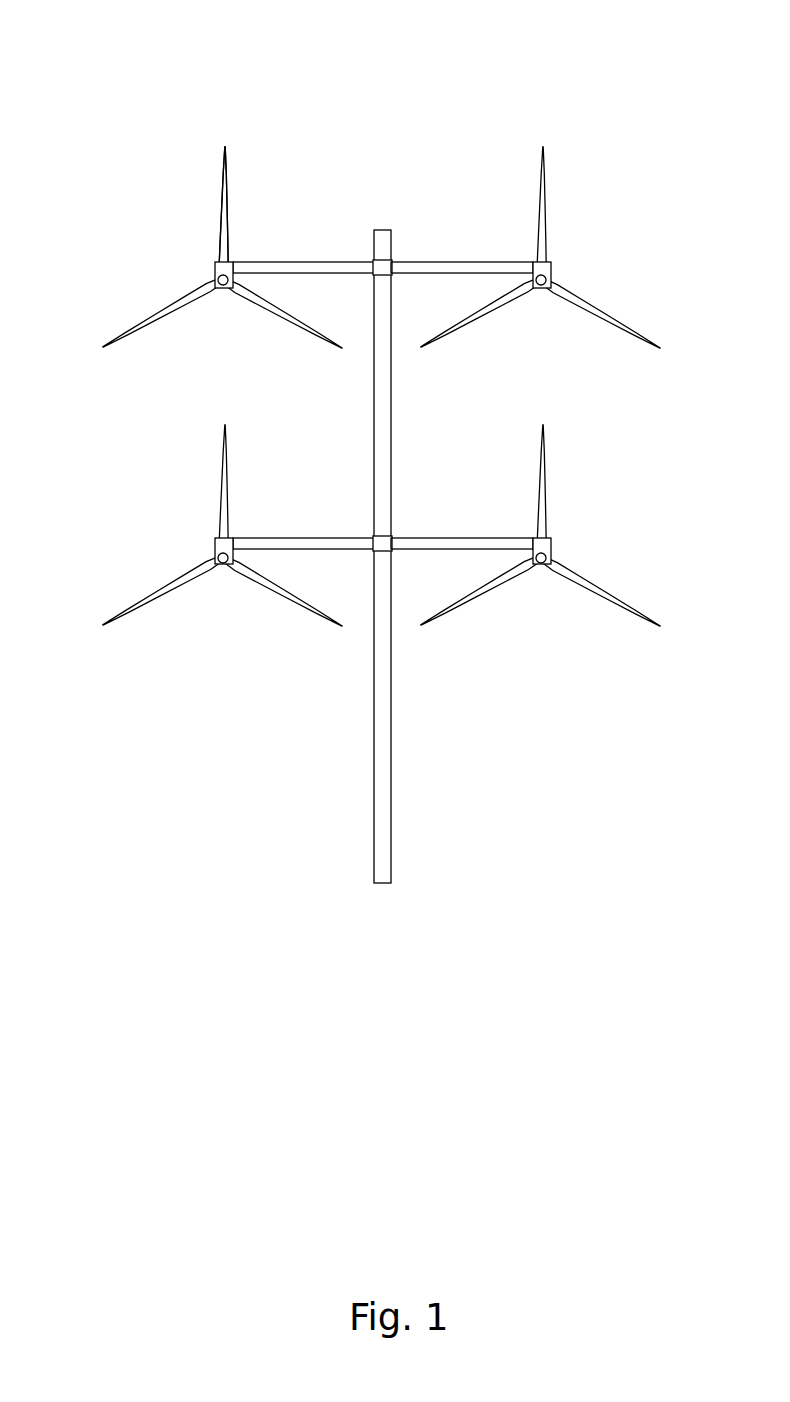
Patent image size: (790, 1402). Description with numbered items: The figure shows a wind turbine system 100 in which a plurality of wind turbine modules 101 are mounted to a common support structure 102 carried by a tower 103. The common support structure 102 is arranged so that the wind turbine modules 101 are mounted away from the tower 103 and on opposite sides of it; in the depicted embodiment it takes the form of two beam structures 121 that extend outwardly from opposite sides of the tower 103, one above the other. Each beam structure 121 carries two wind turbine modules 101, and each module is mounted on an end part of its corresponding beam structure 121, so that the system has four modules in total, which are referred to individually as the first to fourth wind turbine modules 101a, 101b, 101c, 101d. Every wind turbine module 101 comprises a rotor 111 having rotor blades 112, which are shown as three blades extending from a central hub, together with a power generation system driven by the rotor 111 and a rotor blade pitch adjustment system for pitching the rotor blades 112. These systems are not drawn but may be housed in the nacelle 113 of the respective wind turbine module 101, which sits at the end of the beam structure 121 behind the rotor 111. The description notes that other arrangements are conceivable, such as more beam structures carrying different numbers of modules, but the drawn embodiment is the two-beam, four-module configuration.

The wind turbine system 100 is at (110, 48).
The wind turbine module 101 is at (383, 386).
The first wind turbine module 101a is at (207, 277).
The second wind turbine module 101b is at (562, 277).
The third wind turbine module 101c is at (198, 557).
The fourth wind turbine module 101d is at (562, 550).
The common support structure 102 is at (301, 257).
The tower 103 is at (397, 783).
The rotor 111 is at (208, 187).
The rotor blade 112 is at (225, 217).
The nacelle 113 is at (542, 287).
The beam structure 121 is at (452, 258).